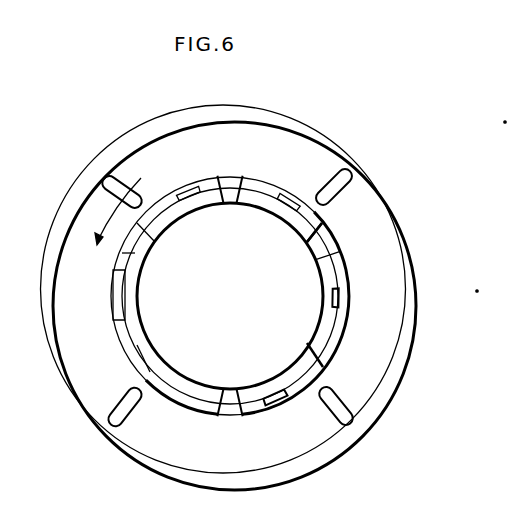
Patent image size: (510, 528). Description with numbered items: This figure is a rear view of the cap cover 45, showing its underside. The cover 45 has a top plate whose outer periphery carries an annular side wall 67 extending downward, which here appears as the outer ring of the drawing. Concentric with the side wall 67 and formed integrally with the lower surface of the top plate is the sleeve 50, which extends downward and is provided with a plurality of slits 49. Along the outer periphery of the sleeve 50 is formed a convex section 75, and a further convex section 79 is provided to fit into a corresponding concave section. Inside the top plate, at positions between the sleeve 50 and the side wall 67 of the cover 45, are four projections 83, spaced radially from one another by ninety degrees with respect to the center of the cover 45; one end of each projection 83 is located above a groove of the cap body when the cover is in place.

The cover 45 is at (394, 186).
The annular side wall 67 is at (403, 231).
The projections 83 is at (113, 177).
The convex section 79 is at (250, 178).
The convex section 75 is at (343, 302).
The sleeve 50 is at (256, 198).
The slits 49 is at (316, 245).